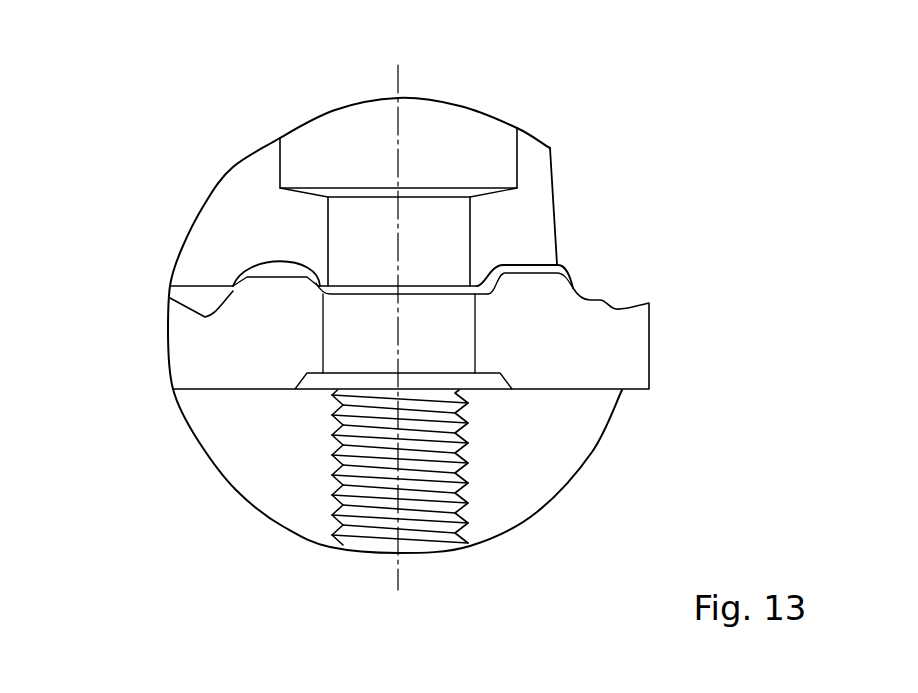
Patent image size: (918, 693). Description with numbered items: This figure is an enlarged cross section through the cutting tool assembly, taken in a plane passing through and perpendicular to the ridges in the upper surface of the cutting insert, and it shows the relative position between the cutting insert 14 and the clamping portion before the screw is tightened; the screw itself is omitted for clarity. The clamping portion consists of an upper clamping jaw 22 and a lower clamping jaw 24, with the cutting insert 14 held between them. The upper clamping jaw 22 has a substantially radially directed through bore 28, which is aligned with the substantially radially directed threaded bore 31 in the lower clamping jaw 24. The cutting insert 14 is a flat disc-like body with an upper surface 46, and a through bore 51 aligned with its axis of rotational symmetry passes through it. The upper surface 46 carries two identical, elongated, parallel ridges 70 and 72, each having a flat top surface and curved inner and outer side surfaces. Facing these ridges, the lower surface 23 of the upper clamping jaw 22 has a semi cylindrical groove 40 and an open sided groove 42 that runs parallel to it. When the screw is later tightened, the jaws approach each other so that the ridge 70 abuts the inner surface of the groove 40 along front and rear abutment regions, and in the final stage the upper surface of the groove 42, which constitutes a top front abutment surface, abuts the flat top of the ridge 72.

The upper clamping jaw 22 is at (243, 188).
The through bore 28 is at (442, 222).
The ridge 72 is at (536, 262).
The upper surface 46 is at (627, 278).
The ridge 70 is at (255, 267).
The lower surface 23 is at (158, 298).
The cutting insert 14 is at (200, 358).
The semi cylindrical groove 40 is at (280, 262).
The lower clamping jaw 24 is at (277, 485).
The threaded bore 31 is at (368, 525).
The through bore 51 is at (427, 340).
The open sided groove 42 is at (515, 268).